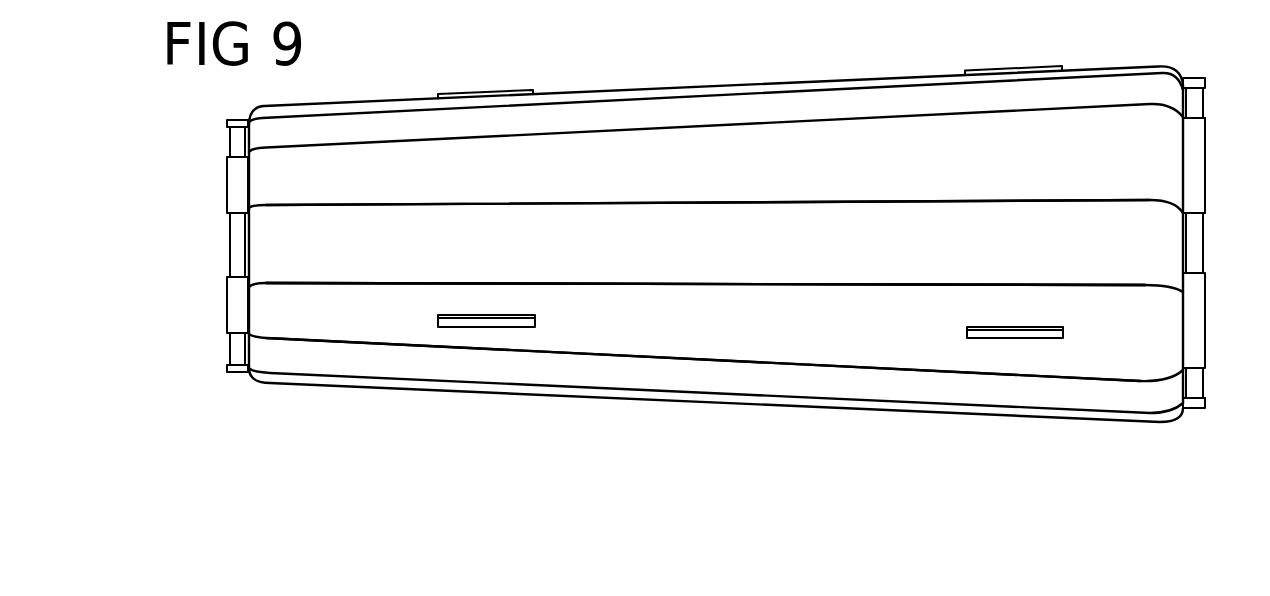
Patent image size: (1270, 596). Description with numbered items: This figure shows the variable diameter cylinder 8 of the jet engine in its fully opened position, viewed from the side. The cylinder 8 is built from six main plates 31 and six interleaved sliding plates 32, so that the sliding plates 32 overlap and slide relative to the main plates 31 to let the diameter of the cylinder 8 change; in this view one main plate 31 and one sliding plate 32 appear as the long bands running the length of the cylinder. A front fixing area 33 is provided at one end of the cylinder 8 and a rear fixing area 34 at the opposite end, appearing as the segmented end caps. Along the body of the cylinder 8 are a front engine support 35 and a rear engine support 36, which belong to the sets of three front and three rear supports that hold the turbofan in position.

The cylinder 8 is at (769, 453).
The main plate 31 is at (888, 453).
The sliding plate 32 is at (658, 453).
The front fixing area 33 is at (187, 452).
The rear fixing area 34 is at (1235, 452).
The front engine support 35 is at (452, 452).
The rear engine support 36 is at (1073, 455).